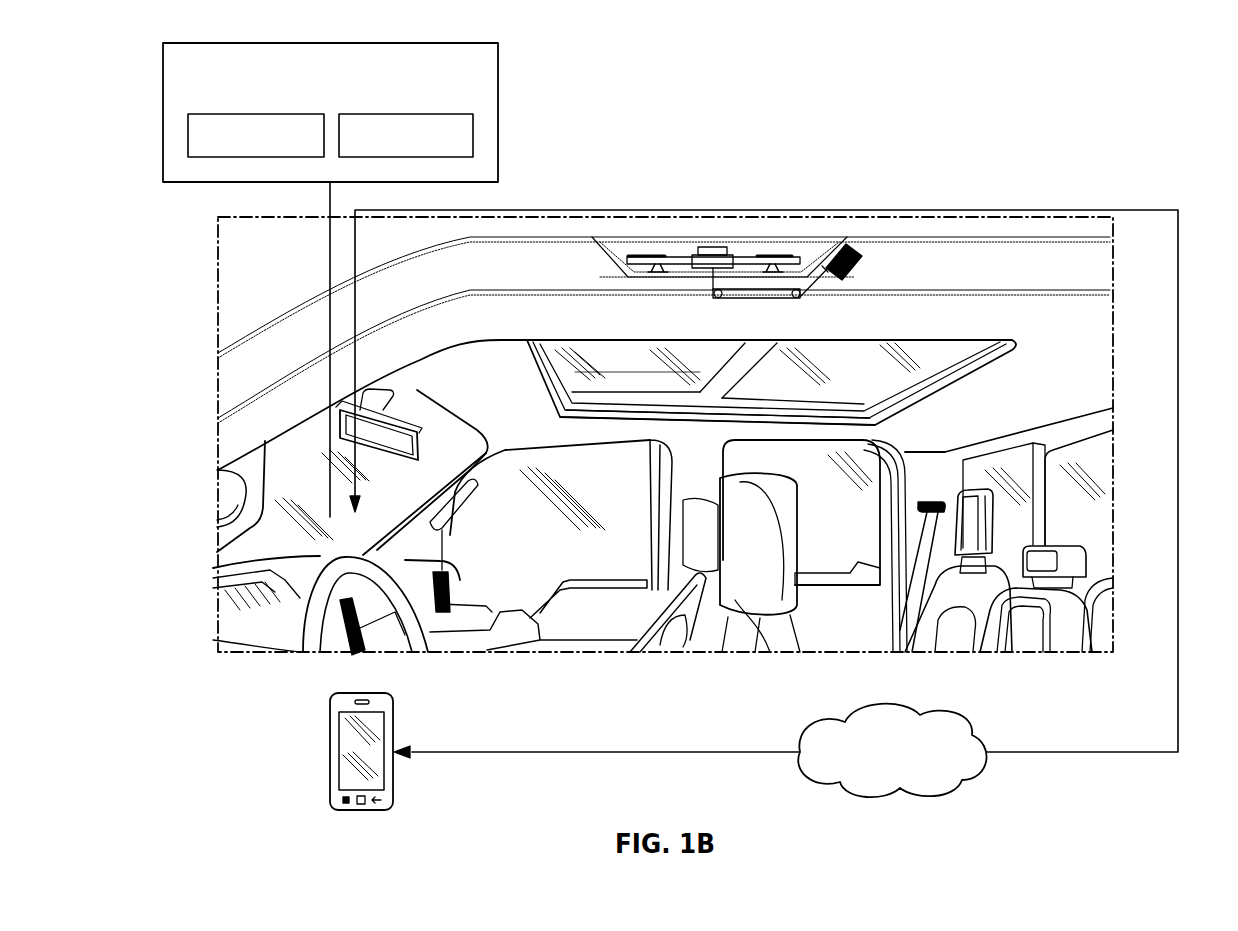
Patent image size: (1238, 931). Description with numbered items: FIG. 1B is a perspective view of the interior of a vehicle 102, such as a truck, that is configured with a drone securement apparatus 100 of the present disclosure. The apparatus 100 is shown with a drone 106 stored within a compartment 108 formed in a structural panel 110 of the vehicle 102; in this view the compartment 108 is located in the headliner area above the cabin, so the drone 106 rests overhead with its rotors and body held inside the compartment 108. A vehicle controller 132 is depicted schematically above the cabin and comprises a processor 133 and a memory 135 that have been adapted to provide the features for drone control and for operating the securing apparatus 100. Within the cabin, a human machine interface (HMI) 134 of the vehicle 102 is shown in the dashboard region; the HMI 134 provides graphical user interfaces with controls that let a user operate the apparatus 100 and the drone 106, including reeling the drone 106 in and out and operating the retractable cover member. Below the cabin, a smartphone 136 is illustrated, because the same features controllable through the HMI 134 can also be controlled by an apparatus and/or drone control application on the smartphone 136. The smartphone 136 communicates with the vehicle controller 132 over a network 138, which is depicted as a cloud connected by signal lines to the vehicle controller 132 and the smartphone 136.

The apparatus 100 is at (915, 143).
The vehicle 102 is at (1106, 192).
The drone 106 is at (728, 256).
The compartment 108 is at (628, 246).
The structural panel 110 is at (870, 250).
The vehicle controller 132 is at (498, 110).
The processor 133 is at (188, 136).
The human machine interface (HMI) 134 is at (390, 638).
The memory 135 is at (473, 136).
The smartphone 136 is at (333, 698).
The network 138 is at (876, 717).